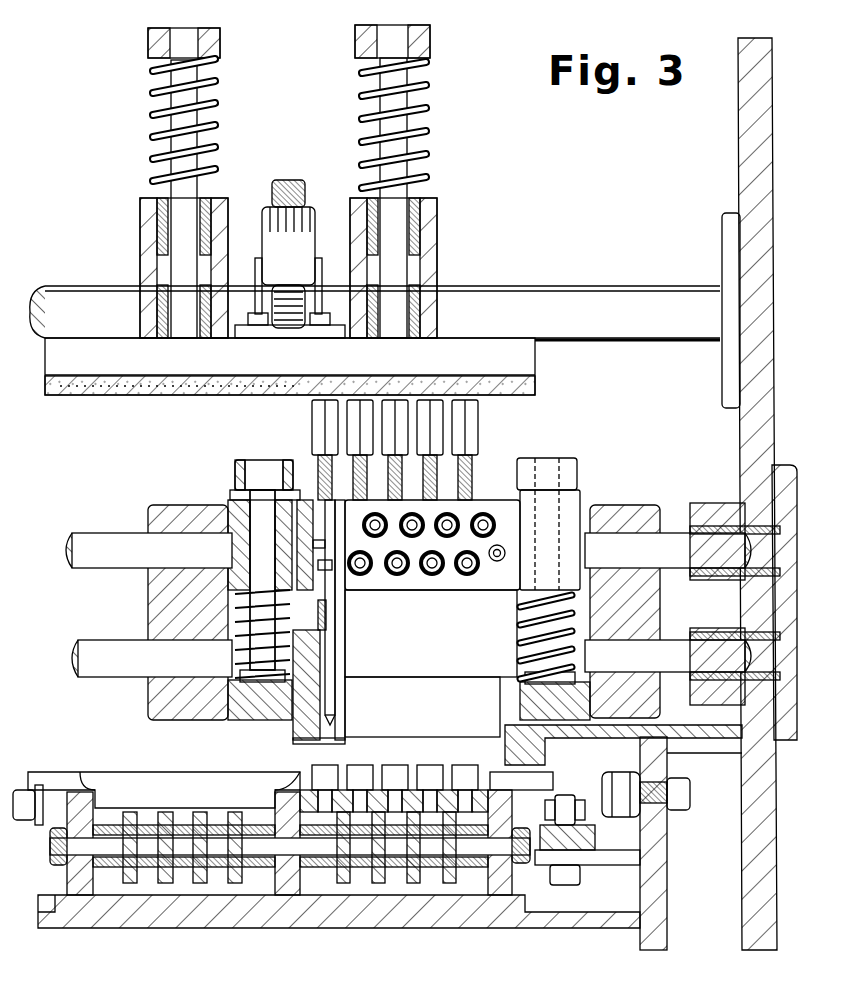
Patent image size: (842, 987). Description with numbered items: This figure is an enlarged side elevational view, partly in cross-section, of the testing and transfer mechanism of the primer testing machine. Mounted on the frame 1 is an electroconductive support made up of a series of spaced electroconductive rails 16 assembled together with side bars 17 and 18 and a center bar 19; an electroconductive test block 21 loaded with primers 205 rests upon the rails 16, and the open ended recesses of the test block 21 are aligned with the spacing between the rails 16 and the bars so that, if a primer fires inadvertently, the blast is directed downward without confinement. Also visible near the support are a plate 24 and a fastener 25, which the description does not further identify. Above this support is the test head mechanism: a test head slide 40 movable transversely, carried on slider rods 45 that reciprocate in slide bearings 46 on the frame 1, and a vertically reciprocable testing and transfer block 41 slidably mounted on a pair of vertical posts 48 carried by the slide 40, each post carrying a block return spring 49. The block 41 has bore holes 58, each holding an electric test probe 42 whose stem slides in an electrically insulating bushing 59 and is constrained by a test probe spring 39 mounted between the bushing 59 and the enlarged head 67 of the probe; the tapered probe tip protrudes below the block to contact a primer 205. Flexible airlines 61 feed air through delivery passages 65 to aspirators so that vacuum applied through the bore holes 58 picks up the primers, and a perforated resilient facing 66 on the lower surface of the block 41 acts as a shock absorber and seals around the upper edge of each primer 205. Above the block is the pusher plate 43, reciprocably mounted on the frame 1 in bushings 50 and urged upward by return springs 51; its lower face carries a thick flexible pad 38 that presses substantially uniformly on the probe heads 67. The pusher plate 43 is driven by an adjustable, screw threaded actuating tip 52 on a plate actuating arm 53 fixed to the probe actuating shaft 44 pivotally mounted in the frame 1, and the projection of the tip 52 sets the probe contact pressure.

The frame 1 is at (140, 213).
The electroconductive rails 16 is at (127, 882).
The side bar 17 is at (512, 885).
The side bar 18 is at (70, 880).
The center bar 19 is at (280, 900).
The test block 21 is at (420, 768).
The cover plate 24 is at (135, 778).
The screw 25 is at (22, 790).
The pad 38 is at (122, 392).
The test probe spring 39 is at (325, 475).
The test head slide 40 is at (172, 505).
The testing and transfer block 41 is at (232, 515).
The test probe 42 is at (300, 724).
The pusher plate 43 is at (535, 360).
The probe actuating shaft 44 is at (62, 300).
The slider rods 45 is at (88, 540).
The slide bearings 46 is at (710, 520).
The vertical posts 48 is at (255, 500).
The block return spring 49 is at (245, 672).
The bushings 50 is at (215, 210).
The return springs 51 is at (160, 108).
The pusher plate actuating tip 52 is at (292, 328).
The plate actuating arm 53 is at (305, 240).
The bore holes 58 is at (305, 742).
The insulating bushing 59 is at (328, 500).
The flexible airlines 61 is at (483, 538).
The delivery passages 65 is at (445, 522).
The resilient facing 66 is at (310, 745).
The enlarged head 67 is at (315, 412).
The primer 205 is at (395, 765).